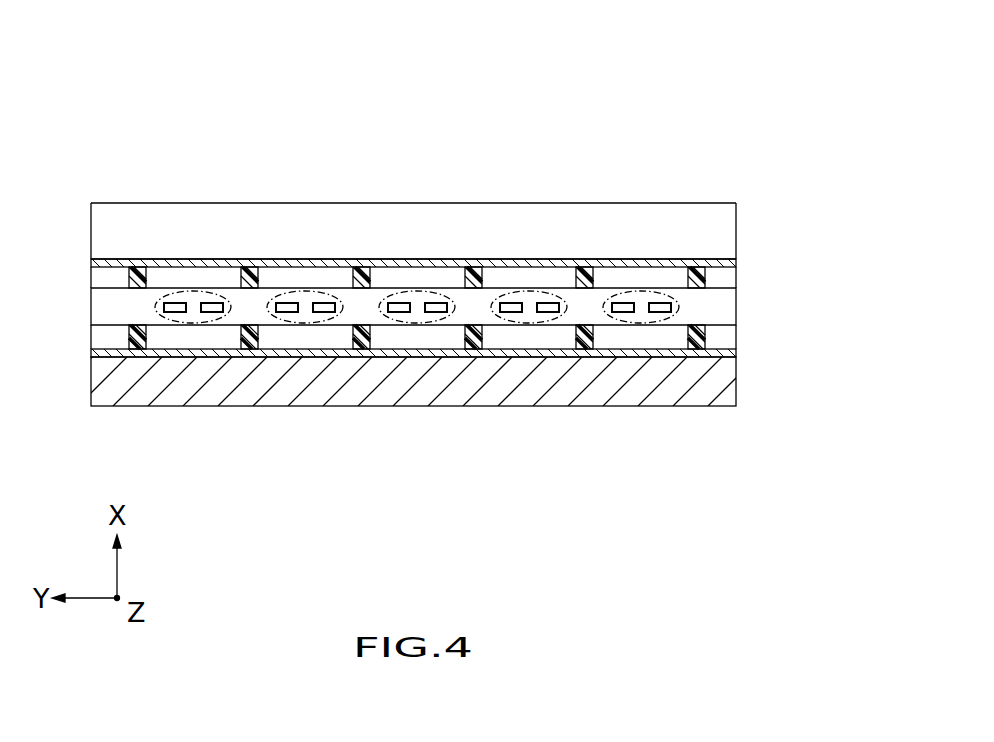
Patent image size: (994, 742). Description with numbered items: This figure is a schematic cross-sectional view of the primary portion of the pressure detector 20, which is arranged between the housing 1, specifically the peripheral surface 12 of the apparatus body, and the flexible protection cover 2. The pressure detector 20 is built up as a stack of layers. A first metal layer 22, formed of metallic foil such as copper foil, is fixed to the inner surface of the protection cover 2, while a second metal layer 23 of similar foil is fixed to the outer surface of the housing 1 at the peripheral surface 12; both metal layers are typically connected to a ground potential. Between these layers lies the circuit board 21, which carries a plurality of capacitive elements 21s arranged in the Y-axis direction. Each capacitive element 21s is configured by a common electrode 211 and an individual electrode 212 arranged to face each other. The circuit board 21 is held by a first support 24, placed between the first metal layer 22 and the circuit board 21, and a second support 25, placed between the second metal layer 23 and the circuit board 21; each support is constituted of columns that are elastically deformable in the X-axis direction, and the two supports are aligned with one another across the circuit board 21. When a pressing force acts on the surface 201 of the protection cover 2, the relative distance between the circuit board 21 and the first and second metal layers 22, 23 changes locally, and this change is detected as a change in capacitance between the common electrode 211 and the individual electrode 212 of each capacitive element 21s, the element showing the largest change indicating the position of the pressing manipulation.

The pressure detector 20 is at (92, 108).
The flexible protection cover 2 is at (448, 198).
The surface of the protection cover 201 is at (674, 204).
The first metal layer 22 is at (90, 263).
The first support 24 is at (266, 268).
The circuit board 21 is at (736, 304).
The capacitive element 21s is at (170, 290).
The common electrode 211 is at (397, 293).
The individual electrode 212 is at (440, 293).
The second support 25 is at (244, 342).
The second metal layer 23 is at (91, 356).
The housing 1 is at (453, 381).
The peripheral surface 12 is at (736, 383).